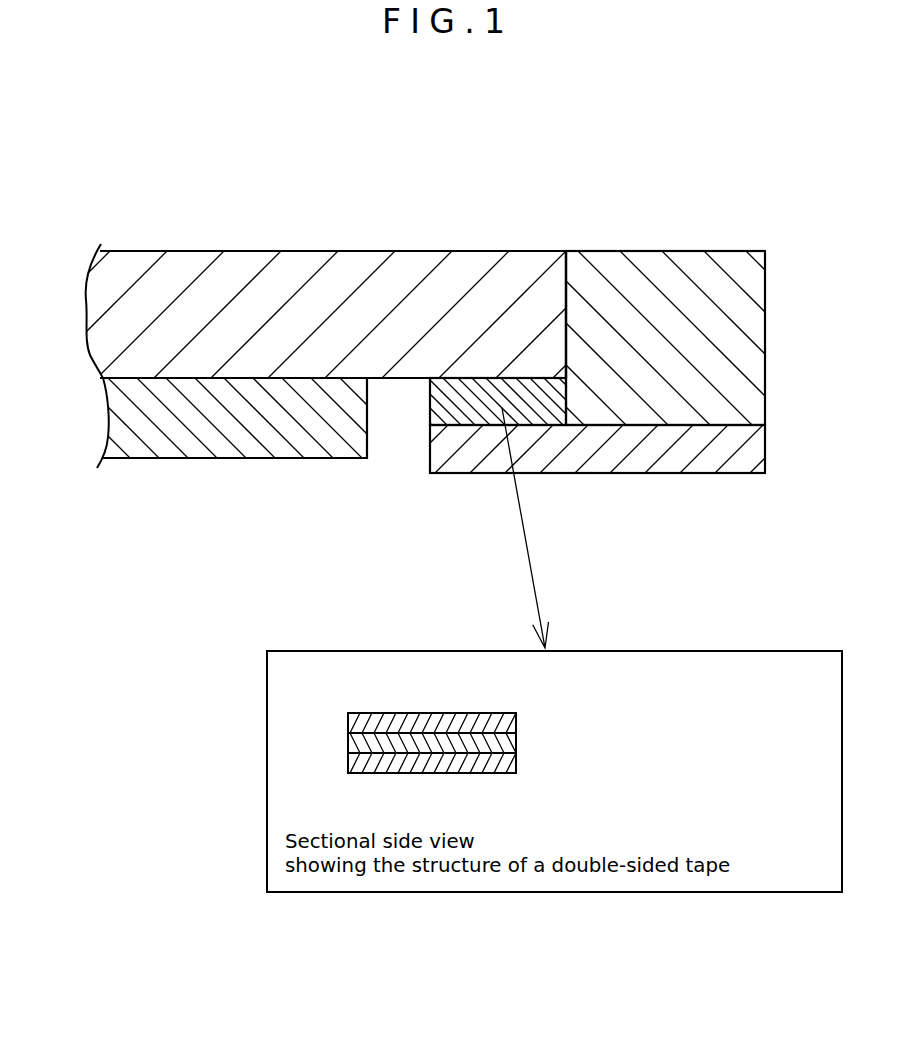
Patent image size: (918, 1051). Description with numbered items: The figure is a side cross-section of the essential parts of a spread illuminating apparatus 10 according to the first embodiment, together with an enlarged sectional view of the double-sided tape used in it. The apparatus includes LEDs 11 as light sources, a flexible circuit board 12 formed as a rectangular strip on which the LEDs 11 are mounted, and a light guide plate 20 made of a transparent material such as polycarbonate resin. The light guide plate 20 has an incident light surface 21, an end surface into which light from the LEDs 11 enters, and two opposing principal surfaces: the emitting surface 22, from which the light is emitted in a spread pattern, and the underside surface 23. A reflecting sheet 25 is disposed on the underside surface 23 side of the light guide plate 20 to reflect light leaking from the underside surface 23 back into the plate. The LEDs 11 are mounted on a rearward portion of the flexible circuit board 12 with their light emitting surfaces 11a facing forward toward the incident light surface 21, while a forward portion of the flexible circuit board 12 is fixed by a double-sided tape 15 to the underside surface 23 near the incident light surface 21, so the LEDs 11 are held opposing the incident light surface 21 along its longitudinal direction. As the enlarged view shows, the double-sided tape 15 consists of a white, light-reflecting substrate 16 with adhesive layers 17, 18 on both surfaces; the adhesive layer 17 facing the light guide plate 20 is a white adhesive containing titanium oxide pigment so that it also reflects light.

The spread illuminating apparatus 10 is at (92, 147).
The LED 11 is at (742, 360).
The light emitting surface 11a is at (567, 305).
The flexible circuit board 12 is at (660, 443).
The double-sided tape 15 is at (425, 403).
The substrate 16 is at (517, 740).
The adhesive layer 17 is at (517, 720).
The adhesive layer 18 is at (517, 763).
The light guide plate 20 is at (409, 275).
The incident light surface 21 is at (567, 275).
The emitting surface 22 is at (248, 251).
The underside surface 23 is at (393, 380).
The reflecting sheet 25 is at (204, 438).